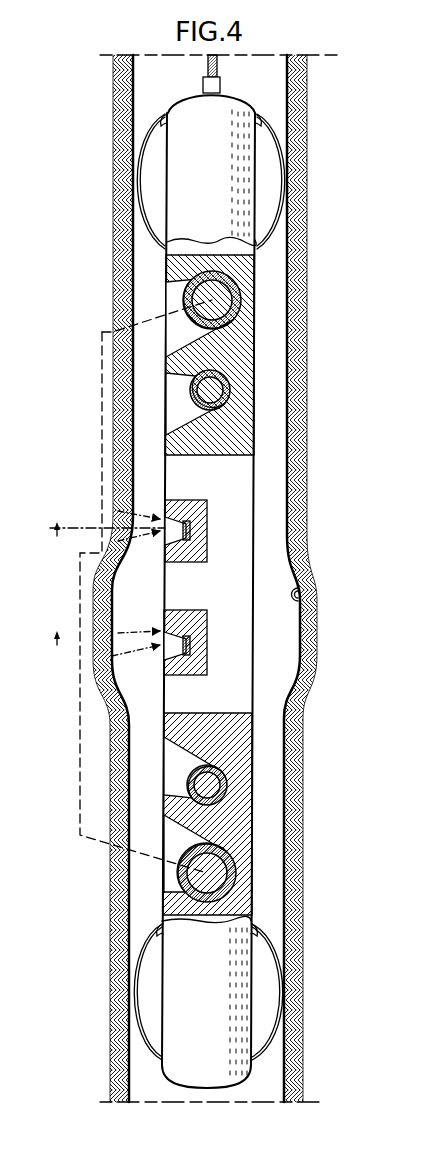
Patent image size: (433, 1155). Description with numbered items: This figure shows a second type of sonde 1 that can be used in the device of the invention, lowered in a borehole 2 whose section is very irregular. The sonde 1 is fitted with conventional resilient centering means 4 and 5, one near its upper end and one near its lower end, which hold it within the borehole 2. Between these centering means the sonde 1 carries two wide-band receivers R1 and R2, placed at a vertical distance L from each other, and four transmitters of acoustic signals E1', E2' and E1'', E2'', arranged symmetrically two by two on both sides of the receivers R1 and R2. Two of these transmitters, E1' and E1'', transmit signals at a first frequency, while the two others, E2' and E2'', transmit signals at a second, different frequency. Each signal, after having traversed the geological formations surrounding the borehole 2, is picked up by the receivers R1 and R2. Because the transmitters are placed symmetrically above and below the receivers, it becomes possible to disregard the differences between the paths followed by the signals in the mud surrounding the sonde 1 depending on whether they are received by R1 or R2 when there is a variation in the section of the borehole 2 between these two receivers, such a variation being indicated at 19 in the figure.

The sonde 1 is at (262, 457).
The borehole 2 is at (296, 88).
The resilient centering means 4 is at (283, 135).
The resilient centering means 5 is at (270, 1047).
The variation in the section of the borehole 19 is at (302, 588).
The transmitter E1' is at (263, 314).
The transmitter E2' is at (263, 399).
The transmitter E1'' is at (262, 858).
The transmitter E2'' is at (262, 771).
The wide-band receiver R1 is at (207, 525).
The wide-band receiver R2 is at (207, 642).
The vertical distance L is at (125, 586).